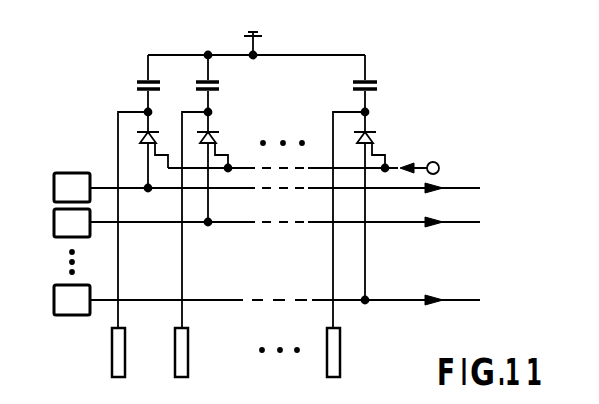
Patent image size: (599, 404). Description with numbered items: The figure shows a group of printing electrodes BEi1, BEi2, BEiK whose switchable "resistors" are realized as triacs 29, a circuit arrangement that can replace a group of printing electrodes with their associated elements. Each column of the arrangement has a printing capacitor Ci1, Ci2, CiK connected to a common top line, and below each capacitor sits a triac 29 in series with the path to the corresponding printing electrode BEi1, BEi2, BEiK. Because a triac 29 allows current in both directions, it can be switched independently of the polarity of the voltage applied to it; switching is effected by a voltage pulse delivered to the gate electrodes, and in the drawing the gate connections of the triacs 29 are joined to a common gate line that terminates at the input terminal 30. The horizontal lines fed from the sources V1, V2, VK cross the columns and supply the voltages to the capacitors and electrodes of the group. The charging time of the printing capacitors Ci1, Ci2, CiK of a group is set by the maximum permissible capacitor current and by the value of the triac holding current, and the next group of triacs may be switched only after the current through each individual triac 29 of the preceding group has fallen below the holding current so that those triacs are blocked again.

The triac 29 is at (386, 125).
The input terminal 30 is at (420, 164).
The capacitor Ci1 is at (143, 81).
The capacitor Ci2 is at (212, 81).
The capacitor CiK is at (354, 81).
The voltage source V1 is at (65, 173).
The voltage source V2 is at (90, 230).
The voltage source VK is at (67, 316).
The output element BEi1 is at (118, 360).
The output element BEi2 is at (182, 360).
The output element BEiK is at (334, 358).